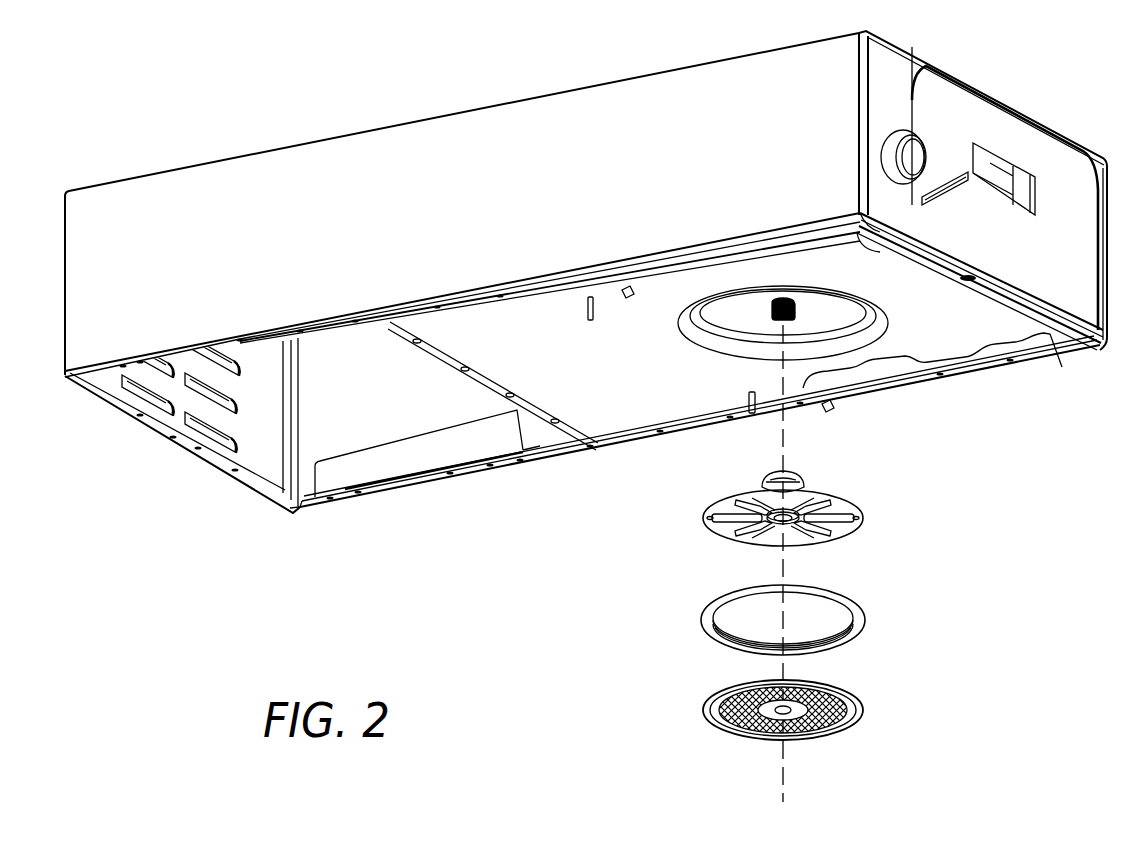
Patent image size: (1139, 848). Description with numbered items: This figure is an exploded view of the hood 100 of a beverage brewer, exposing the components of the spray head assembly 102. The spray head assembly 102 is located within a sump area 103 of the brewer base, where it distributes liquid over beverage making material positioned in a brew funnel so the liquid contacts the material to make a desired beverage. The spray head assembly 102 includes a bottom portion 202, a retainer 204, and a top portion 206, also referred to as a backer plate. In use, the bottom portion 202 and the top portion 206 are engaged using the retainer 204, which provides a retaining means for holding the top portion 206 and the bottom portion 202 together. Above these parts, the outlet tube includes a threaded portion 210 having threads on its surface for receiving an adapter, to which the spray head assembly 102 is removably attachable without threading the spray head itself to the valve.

The hood 100 is at (297, 145).
The spray head assembly 102 is at (578, 596).
The sump area 103 is at (685, 323).
The bottom portion 202 is at (704, 708).
The retainer 204 is at (702, 616).
The top portion 206 is at (702, 518).
The threaded portion 210 is at (796, 310).